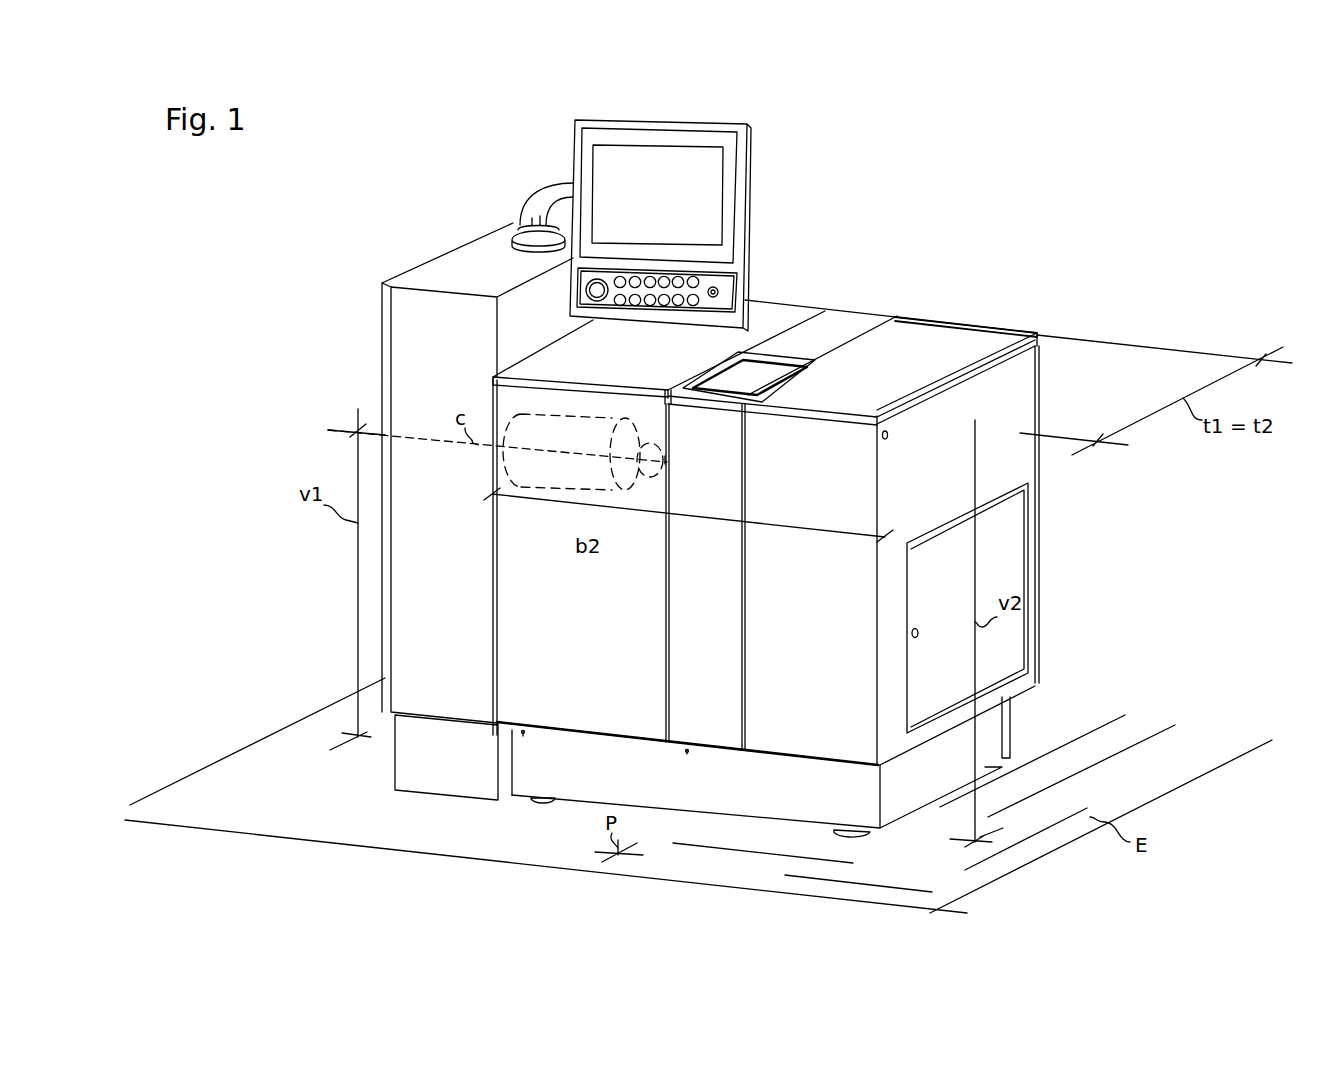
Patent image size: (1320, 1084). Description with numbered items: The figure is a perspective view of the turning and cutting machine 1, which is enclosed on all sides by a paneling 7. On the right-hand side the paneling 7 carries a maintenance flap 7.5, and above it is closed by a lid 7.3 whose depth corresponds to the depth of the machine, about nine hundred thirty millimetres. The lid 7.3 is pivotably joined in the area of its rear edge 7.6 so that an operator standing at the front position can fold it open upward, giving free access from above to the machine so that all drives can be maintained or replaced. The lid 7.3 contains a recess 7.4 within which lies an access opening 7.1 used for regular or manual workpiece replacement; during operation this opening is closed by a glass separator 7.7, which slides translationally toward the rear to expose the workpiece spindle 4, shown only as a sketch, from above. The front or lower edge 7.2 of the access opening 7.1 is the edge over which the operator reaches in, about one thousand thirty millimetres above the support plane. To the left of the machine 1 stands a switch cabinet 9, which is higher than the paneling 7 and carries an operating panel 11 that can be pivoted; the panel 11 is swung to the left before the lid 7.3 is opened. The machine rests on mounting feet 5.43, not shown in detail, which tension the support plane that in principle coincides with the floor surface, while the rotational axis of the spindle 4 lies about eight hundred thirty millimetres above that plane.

The turning and cutting machine 1 is at (357, 189).
The workpiece spindle 4 is at (600, 420).
The paneling 7 is at (1020, 407).
The access opening 7.1 is at (771, 366).
The lower edge 7.2 is at (707, 397).
The lid 7.3 is at (925, 348).
The recess 7.4 is at (813, 356).
The maintenance flap 7.5 is at (1022, 552).
The rear edge 7.6 is at (998, 330).
The glass separator 7.7 is at (752, 388).
The switch cabinet 9 is at (449, 504).
The operating panel 11 is at (672, 201).
The mounting feet 5.43 is at (862, 835).